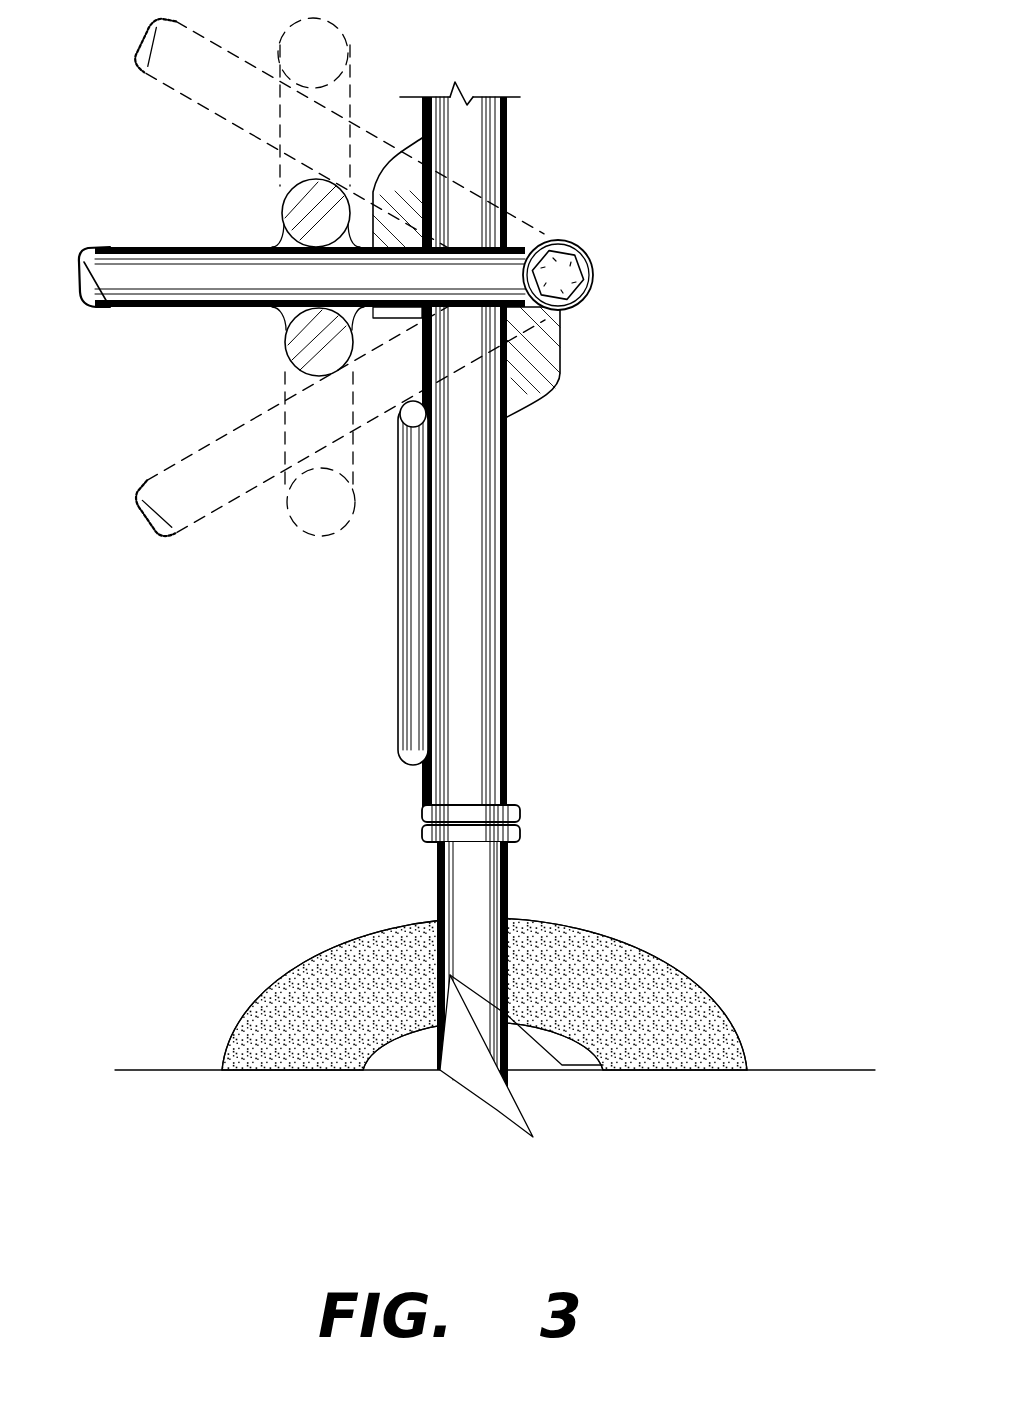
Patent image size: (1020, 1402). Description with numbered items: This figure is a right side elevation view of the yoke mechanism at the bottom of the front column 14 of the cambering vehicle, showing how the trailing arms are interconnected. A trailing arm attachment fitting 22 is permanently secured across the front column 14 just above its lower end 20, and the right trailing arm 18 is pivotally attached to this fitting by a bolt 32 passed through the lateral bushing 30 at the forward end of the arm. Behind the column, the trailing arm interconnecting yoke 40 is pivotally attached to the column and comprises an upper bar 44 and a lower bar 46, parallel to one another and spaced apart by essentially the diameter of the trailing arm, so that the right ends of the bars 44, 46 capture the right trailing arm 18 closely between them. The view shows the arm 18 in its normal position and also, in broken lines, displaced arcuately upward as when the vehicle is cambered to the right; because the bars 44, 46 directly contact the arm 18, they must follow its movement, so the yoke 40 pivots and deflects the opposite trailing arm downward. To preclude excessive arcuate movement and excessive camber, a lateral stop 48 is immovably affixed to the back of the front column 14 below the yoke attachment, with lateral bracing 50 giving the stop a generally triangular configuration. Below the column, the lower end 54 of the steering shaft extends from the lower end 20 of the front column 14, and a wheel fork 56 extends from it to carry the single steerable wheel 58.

The front column 14 is at (510, 527).
The right trailing arm 18 is at (135, 52).
The lower end 20 is at (513, 785).
The trailing arm attachment fitting 22 is at (595, 280).
The lateral bushing 30 is at (558, 275).
The bolt 32 is at (578, 258).
The trailing arm interconnecting yoke 40 is at (238, 221).
The upper bar 44 is at (283, 197).
The lower bar 46 is at (283, 357).
The lateral stop 48 is at (404, 408).
The lateral bracing 50 is at (398, 595).
The lower end of steering shaft 54 is at (437, 895).
The wheel fork 56 is at (492, 951).
The steerable wheel 58 is at (650, 952).